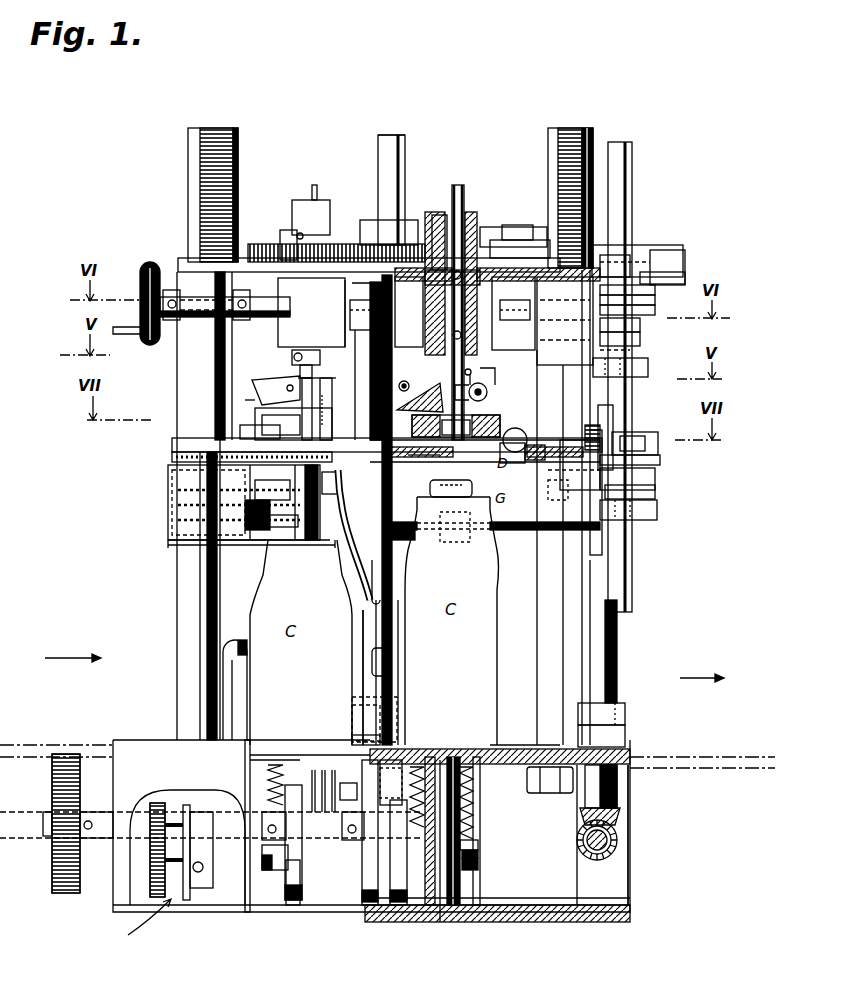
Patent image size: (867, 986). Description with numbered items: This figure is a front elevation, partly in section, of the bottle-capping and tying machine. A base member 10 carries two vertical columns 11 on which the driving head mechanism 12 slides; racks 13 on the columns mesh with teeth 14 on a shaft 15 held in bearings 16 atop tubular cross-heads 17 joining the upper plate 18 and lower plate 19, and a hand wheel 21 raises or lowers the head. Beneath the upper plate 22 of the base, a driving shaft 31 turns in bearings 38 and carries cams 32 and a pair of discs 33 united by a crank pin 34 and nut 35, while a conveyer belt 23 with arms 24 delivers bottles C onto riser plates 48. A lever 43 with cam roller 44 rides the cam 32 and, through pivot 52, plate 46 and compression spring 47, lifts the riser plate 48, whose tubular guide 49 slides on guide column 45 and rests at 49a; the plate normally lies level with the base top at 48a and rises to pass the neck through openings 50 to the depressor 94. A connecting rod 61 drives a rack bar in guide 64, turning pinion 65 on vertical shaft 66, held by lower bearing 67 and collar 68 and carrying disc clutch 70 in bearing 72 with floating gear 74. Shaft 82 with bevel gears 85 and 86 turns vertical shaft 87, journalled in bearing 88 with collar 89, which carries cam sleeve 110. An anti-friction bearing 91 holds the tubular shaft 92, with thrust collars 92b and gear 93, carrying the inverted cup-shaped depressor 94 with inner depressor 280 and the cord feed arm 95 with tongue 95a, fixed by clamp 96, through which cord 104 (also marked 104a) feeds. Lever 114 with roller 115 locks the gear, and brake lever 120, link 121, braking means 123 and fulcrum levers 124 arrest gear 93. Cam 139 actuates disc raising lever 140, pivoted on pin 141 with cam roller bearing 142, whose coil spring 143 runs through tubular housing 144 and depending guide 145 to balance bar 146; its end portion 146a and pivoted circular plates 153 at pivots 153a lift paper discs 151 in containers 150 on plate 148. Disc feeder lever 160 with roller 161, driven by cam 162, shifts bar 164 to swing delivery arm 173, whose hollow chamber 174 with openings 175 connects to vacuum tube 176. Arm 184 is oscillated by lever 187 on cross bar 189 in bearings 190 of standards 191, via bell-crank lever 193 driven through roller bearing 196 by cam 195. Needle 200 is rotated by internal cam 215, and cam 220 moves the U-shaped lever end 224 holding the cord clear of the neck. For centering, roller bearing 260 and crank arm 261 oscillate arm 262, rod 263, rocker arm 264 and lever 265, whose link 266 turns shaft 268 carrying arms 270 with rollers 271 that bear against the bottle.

The base member 10 is at (132, 728).
The columns 11 is at (177, 578).
The driving head mechanism 12 is at (346, 184).
The rack 13 is at (200, 160).
The teeth 14 is at (182, 322).
The shaft 15 is at (248, 315).
The bearings 16 is at (190, 320).
The tubular cross-heads 17 is at (180, 400).
The upper plate 18 is at (172, 262).
The lower plate 19 is at (172, 445).
The hand wheel 21 is at (141, 266).
The upper plate of base member 22 is at (255, 752).
The conveyer belt 23 is at (255, 758).
The arms 24 is at (223, 655).
The rotatable shaft 31 is at (260, 812).
The cams 32 is at (268, 777).
The discs 33 is at (390, 905).
The crank pin 34 is at (405, 745).
The nut 35 is at (358, 770).
The bearings 38 is at (340, 850).
The lever 43 is at (275, 870).
The cam roller 44 is at (262, 831).
The guide column 45 is at (430, 905).
The plate 46 is at (478, 846).
The compression spring 47 is at (474, 819).
The riser plate 48 is at (470, 748).
The riser plate level position 48a is at (490, 745).
The tubular guide 49 is at (282, 890).
The guide rest position 49a is at (415, 905).
The openings 50 is at (480, 455).
The pivot 52 is at (480, 861).
The connecting rod 61 is at (400, 765).
The guide 64 is at (425, 757).
The pinion 65 is at (330, 790).
The vertically disposed shaft 66 is at (360, 624).
The lower bearing 67 is at (348, 722).
The collar 68 is at (392, 689).
The disc clutch 70 is at (352, 233).
The bearing 72 is at (326, 315).
The gear 74 is at (358, 232).
The shaft 82 is at (617, 839).
The second bevel gear 85 is at (615, 856).
The bevel gear 86 is at (620, 818).
The vertical rotatable shaft 87 is at (617, 649).
The bearing 88 is at (625, 734).
The collar 89 is at (625, 713).
The anti-friction bearing 91 is at (516, 338).
The tubular shaft 92 is at (300, 377).
The thrust collars 92b is at (312, 200).
The gear 93 is at (303, 243).
The closure depressor 94 is at (256, 425).
The cord feed arm 95 is at (347, 394).
The tongue 95a is at (240, 400).
The clamp 96 is at (488, 397).
The flexible cord 104 is at (312, 185).
The strip 104a is at (408, 455).
The cam sleeve 110 is at (625, 393).
The lever 114 is at (648, 245).
The roller 115 is at (625, 260).
The brake lever 120 is at (538, 228).
The link 121 is at (530, 240).
The braking means 123 is at (446, 230).
The fulcrum levers 124 is at (512, 225).
The cam 139 is at (635, 326).
The disc raising lever 140 is at (396, 312).
The pin 141 is at (504, 325).
The cam roller bearing 142 is at (635, 338).
The coil spring 143 is at (392, 463).
The tubular housing 144 is at (320, 294).
The depending guide 145 is at (345, 340).
The balance bar 146 is at (405, 535).
The end portion of balance bar 146a is at (362, 575).
The plate 148 is at (332, 542).
The container 150 is at (168, 490).
The paper discs 151 is at (258, 500).
The circular plate 153 is at (180, 515).
The pivot 153a is at (245, 540).
The disc feeder lever 160 is at (655, 293).
The roller 161 is at (655, 313).
The cam 162 is at (655, 303).
The bar 164 is at (430, 215).
The delivery arm 173 is at (172, 456).
The chamber 174 is at (172, 470).
The small openings 175 is at (342, 478).
The flexible vacuum tube 176 is at (332, 474).
The arm 184 is at (292, 452).
The lever 187 is at (318, 408).
The cross bar 189 is at (330, 375).
The bearings 190 is at (304, 390).
The standards 191 is at (332, 395).
The bell-crank lever 193 is at (488, 376).
The cam 195 is at (648, 368).
The roller bearing 196 is at (630, 349).
The needle 200 is at (500, 460).
The internal cam 215 is at (658, 507).
The cam 220 is at (655, 437).
The U-shaped lever end 224 is at (525, 455).
The roller bearing 260 is at (655, 465).
The crank arm 261 is at (655, 480).
The oscillating arm 262 is at (635, 430).
The rod 263 is at (610, 415).
The rocker arm 264 is at (655, 430).
The centrally pivoted lever 265 is at (575, 478).
The link 266 is at (612, 531).
The shaft 268 is at (497, 530).
The arms 270 is at (450, 540).
The rollers 271 is at (452, 480).
The depressor 280 is at (455, 425).